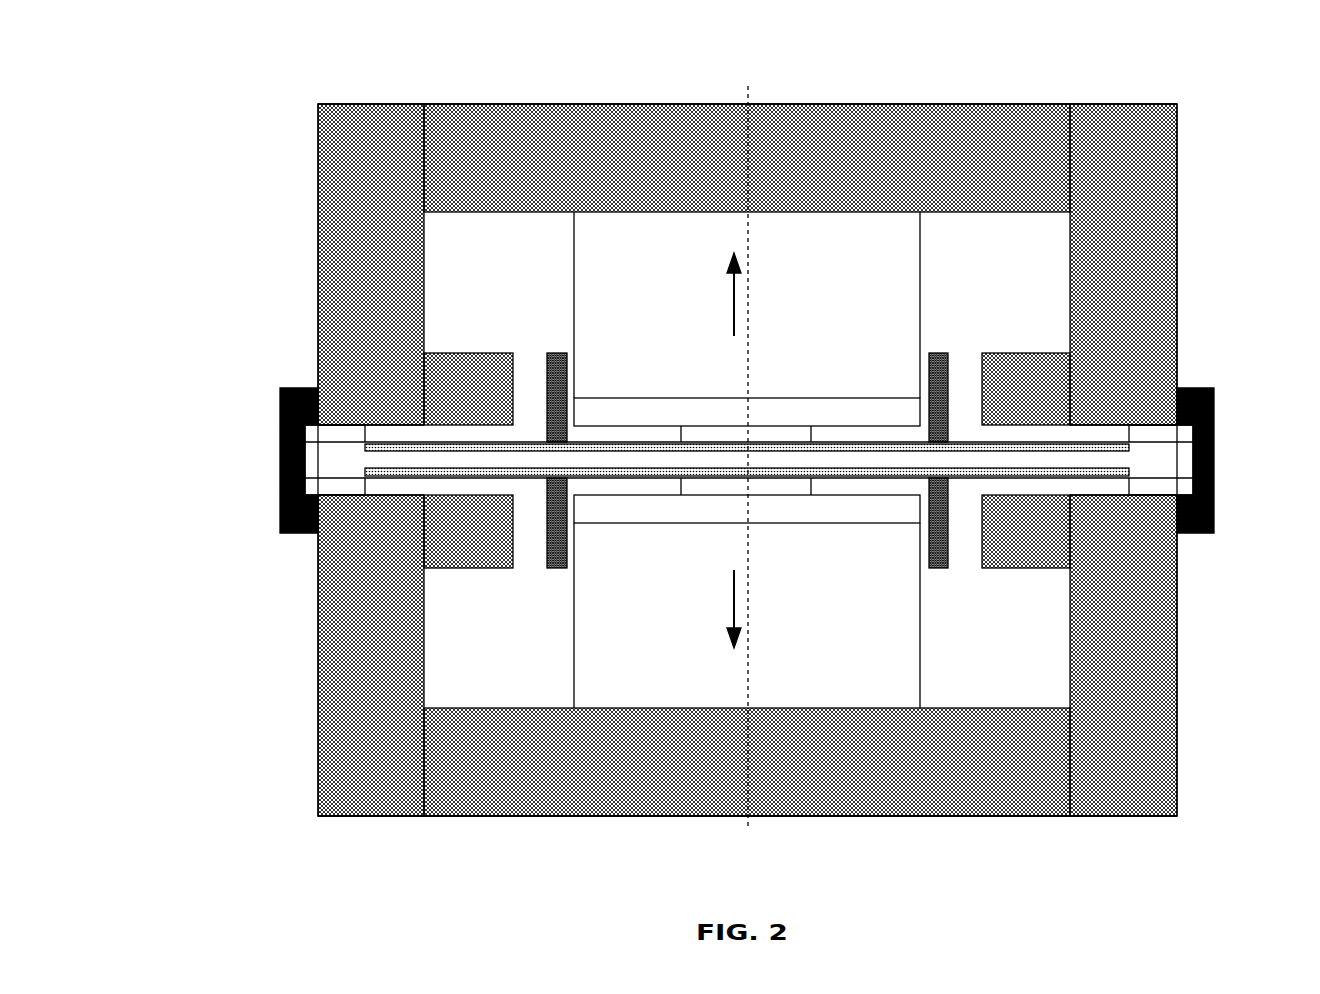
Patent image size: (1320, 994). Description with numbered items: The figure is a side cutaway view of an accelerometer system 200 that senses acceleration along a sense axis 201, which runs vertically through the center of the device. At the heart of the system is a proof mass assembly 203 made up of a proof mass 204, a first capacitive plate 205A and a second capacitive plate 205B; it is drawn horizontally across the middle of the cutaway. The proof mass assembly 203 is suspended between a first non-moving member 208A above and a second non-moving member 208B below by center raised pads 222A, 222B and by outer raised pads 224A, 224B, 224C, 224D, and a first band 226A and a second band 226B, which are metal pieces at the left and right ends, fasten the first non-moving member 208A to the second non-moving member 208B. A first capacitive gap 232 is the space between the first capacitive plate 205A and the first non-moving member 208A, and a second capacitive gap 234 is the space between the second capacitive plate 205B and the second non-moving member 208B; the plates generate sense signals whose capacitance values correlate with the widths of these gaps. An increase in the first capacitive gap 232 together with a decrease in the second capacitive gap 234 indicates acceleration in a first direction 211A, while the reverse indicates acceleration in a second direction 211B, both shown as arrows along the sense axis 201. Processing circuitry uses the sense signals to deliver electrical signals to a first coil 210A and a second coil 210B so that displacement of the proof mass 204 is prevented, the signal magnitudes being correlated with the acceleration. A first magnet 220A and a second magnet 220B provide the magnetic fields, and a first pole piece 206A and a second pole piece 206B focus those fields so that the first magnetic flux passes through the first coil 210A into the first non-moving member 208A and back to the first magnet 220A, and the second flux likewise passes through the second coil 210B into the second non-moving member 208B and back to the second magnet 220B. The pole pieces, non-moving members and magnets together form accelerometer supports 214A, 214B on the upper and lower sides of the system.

The accelerometer system 200 is at (216, 80).
The sense axis 201 is at (740, 295).
The proof mass assembly 203 is at (1063, 460).
The proof mass 204 is at (531, 455).
The first capacitive plate 205A is at (955, 430).
The second capacitive plate 205B is at (955, 478).
The first pole piece 206A is at (585, 400).
The second pole piece 206B is at (585, 505).
The first non-moving member 208A is at (912, 96).
The second non-moving member 208B is at (912, 808).
The first coil 210A is at (935, 345).
The second coil 210B is at (935, 560).
The first direction 211A is at (727, 295).
The second direction 211B is at (727, 598).
The accelerometer support 214A is at (570, 84).
The accelerometer support 214B is at (598, 818).
The first magnet 220A is at (915, 285).
The second magnet 220B is at (915, 628).
The center raised pad 222A is at (770, 430).
The center raised pad 222B is at (778, 478).
The outer raised pad 224A is at (322, 420).
The outer raised pad 224B is at (322, 484).
The outer raised pad 224C is at (1160, 420).
The outer raised pad 224D is at (1160, 484).
The first band 226A is at (290, 380).
The second band 226B is at (1200, 380).
The first capacitive gap 232 is at (460, 432).
The second capacitive gap 234 is at (460, 476).